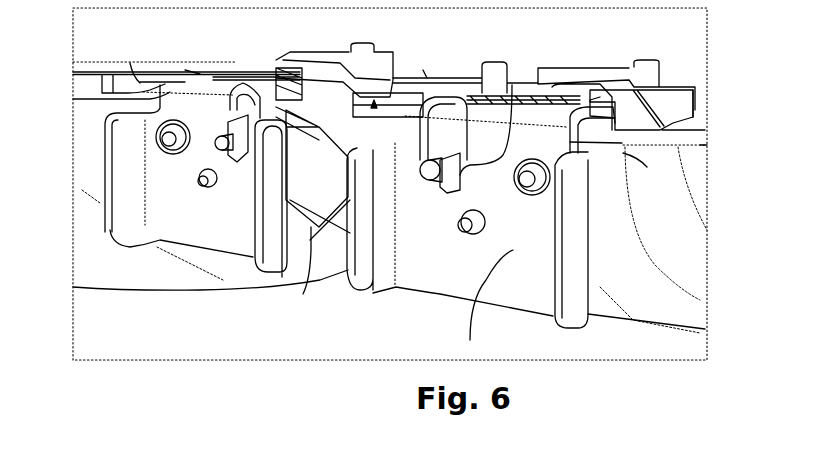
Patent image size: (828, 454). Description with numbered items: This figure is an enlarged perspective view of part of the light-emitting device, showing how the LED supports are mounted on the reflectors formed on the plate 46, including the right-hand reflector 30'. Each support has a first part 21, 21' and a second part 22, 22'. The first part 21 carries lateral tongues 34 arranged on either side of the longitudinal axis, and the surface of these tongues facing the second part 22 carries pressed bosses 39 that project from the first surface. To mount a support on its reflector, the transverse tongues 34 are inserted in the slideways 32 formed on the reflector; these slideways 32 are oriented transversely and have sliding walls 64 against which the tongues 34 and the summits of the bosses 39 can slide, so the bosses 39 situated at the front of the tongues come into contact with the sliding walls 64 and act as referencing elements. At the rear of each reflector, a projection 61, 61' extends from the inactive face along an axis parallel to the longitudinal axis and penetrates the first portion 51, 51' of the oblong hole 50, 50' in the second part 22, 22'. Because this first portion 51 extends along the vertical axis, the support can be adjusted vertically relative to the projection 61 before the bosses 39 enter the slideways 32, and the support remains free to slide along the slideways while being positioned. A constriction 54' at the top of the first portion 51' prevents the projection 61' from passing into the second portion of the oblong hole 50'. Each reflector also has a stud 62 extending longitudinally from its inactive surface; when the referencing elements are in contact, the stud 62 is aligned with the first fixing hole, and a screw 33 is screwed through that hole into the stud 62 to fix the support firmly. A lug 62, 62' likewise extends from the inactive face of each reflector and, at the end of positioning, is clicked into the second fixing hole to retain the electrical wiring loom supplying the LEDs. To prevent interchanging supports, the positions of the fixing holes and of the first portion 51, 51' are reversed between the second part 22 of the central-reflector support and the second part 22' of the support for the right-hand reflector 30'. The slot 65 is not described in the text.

The first part 21 is at (428, 128).
The first part 21' is at (616, 76).
The second part 22 is at (191, 187).
The second part 22' is at (474, 299).
The right-hand reflector 30' is at (717, 172).
The slideways 32 is at (97, 85).
The screw 33 is at (158, 143).
The lateral tongues 34 is at (130, 63).
The bosses 39 is at (185, 70).
The plate 46 is at (639, 344).
The oblong hole 50 is at (257, 58).
The oblong hole 50' is at (536, 85).
The first portion 51 is at (222, 91).
The first portion 51' is at (490, 109).
The constriction 54' is at (399, 78).
The projection 61 is at (161, 228).
The projection 61' is at (382, 244).
The stud 62 is at (203, 251).
The lug 62' is at (436, 273).
The sliding walls 64 is at (300, 267).
The slot 65 is at (608, 160).